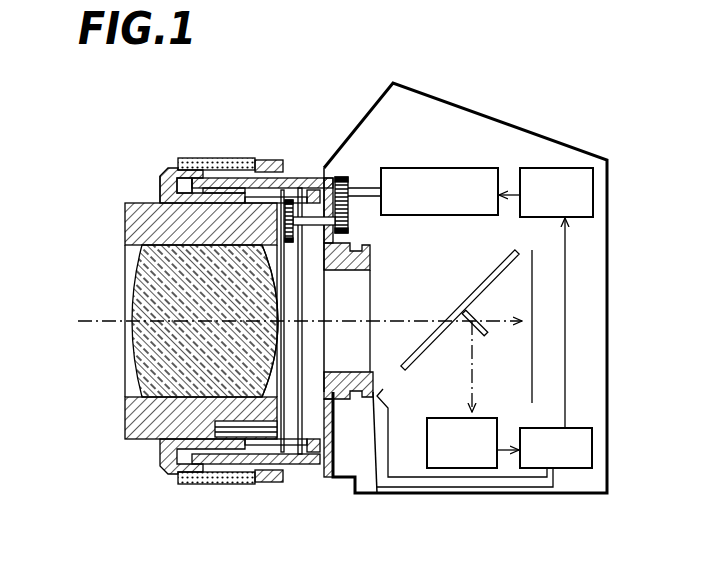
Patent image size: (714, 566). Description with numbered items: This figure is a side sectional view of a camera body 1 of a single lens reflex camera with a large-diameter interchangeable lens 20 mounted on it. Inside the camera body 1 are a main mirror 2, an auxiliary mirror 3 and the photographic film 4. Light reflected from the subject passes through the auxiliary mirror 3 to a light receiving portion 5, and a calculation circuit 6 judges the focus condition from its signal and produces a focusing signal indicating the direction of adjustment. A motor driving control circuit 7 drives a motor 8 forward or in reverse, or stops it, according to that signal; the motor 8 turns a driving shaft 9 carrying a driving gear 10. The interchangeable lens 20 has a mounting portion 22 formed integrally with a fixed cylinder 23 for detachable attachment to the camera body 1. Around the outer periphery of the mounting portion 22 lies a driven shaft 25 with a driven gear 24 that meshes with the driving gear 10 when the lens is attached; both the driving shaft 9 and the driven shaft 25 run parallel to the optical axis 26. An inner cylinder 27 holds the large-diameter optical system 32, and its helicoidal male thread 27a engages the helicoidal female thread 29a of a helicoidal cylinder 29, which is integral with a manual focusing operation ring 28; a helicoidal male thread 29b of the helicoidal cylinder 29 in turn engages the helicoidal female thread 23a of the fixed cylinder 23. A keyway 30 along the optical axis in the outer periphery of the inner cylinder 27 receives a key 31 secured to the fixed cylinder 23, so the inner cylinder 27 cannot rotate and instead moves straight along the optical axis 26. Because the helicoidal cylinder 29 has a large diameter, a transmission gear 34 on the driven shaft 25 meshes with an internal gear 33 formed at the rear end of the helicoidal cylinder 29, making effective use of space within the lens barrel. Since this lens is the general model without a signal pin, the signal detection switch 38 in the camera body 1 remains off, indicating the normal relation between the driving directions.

The camera body 1 is at (547, 125).
The main mirror 2 is at (490, 272).
The auxiliary mirror 3 is at (487, 333).
The photographic film 4 is at (532, 387).
The light receiving portion 5 is at (452, 457).
The calculation circuit 6 is at (546, 464).
The motor driving control circuit 7 is at (546, 207).
The motor 8 is at (430, 207).
The driving shaft 9 is at (363, 186).
The driving gear 10 is at (345, 177).
The interchangeable lens 20 is at (157, 164).
The mounting portion 22 is at (368, 260).
The fixed cylinder 23 is at (318, 176).
The helicoidal female thread 23a is at (188, 158).
The driven gear 24 is at (348, 228).
The driven shaft 25 is at (306, 216).
The optical axis 26 is at (91, 322).
The inner cylinder 27 is at (133, 222).
The helicoidal male thread 27a is at (192, 188).
The manual focusing operation ring 28 is at (273, 160).
The helicoidal cylinder 29 is at (163, 181).
The helicoidal female thread 29a is at (230, 187).
The helicoidal male thread 29b is at (175, 176).
The keyway 30 is at (255, 397).
The key 31 is at (307, 423).
The optical system 32 is at (170, 288).
The internal gear 33 is at (258, 321).
The transmission gear 34 is at (291, 240).
The signal detection switch 38 is at (388, 418).